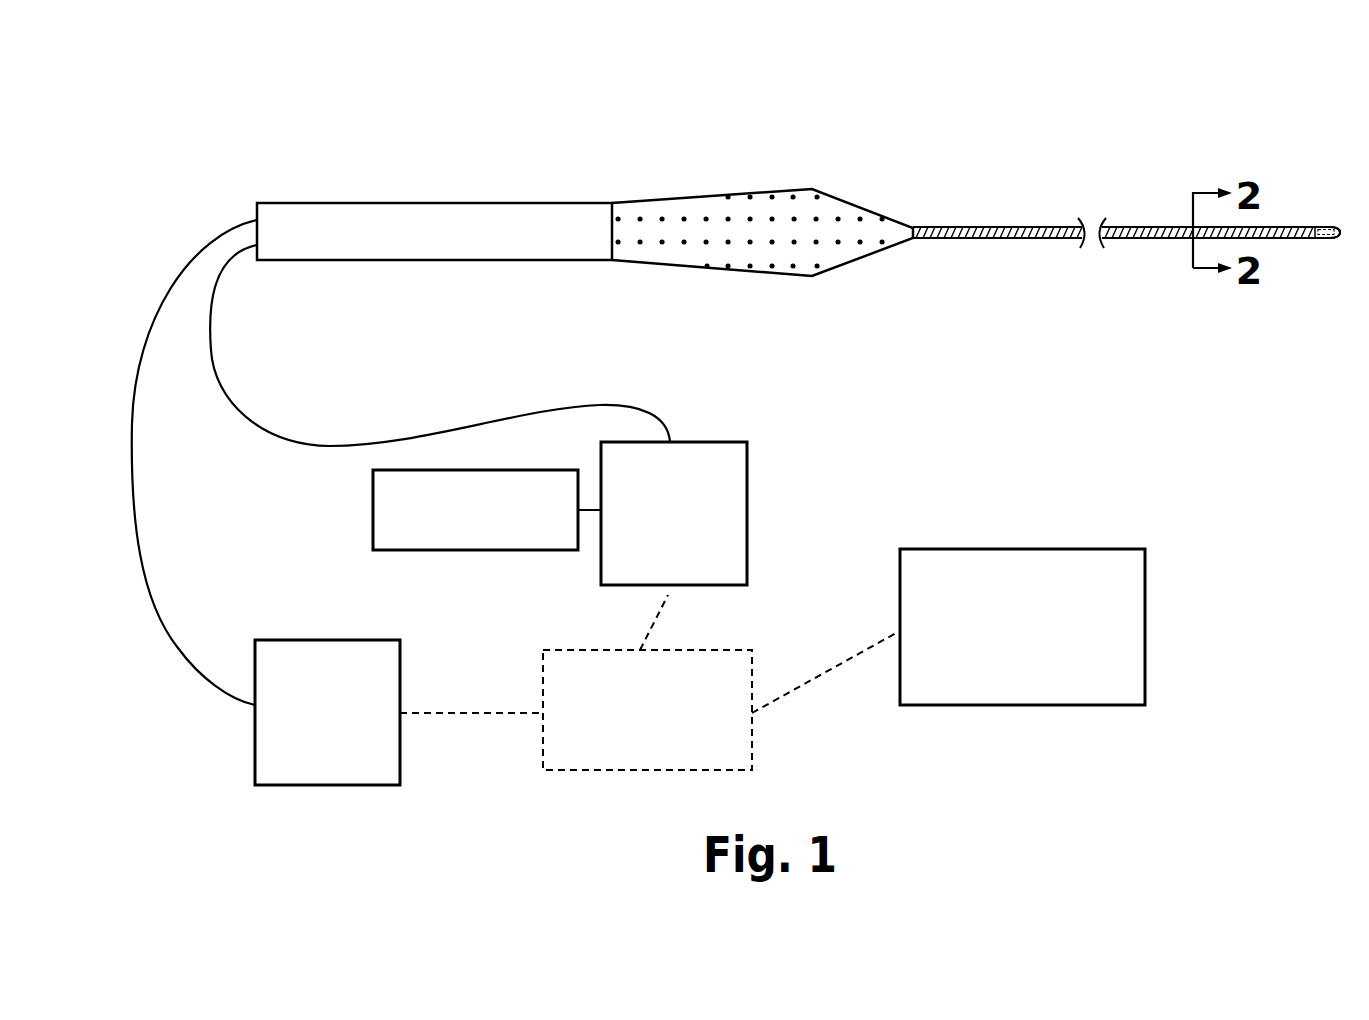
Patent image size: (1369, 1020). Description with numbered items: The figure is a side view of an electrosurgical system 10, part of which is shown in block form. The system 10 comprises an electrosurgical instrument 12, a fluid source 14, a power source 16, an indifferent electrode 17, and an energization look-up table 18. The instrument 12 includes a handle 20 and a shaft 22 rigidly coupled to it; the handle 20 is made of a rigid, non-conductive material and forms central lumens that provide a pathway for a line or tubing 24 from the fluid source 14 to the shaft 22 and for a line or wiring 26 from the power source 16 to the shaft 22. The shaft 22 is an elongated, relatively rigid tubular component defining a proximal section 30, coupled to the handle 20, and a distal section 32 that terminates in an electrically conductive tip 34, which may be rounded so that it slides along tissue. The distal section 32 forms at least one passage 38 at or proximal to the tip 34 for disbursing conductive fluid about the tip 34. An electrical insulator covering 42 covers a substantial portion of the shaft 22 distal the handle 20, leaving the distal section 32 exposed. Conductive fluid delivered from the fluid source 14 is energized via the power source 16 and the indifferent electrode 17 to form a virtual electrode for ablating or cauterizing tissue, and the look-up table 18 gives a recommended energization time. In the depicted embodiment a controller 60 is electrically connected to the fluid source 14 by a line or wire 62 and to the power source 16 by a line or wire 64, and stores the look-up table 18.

The electrosurgical system 10 is at (537, 110).
The electrosurgical instrument 12 is at (735, 187).
The fluid source 14 is at (400, 752).
The power source 16 is at (747, 505).
The indifferent electrode 17 is at (472, 550).
The energization look-up table 18 is at (1145, 612).
The handle 20 is at (663, 263).
The shaft 22 is at (1043, 248).
The tubing 24 is at (150, 562).
The wiring 26 is at (319, 448).
The proximal section 30 is at (963, 224).
The distal section 32 is at (1303, 249).
The electrically conductive tip 34 is at (1326, 221).
The passage 38 is at (1336, 240).
The electrical insulator covering 42 is at (1150, 240).
The controller 60 is at (752, 750).
The wire 62 is at (482, 710).
The wire 64 is at (671, 596).